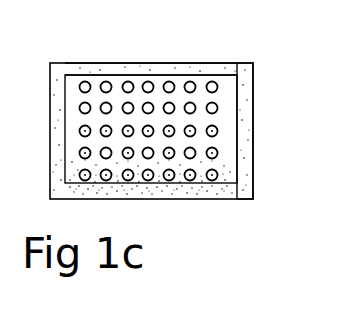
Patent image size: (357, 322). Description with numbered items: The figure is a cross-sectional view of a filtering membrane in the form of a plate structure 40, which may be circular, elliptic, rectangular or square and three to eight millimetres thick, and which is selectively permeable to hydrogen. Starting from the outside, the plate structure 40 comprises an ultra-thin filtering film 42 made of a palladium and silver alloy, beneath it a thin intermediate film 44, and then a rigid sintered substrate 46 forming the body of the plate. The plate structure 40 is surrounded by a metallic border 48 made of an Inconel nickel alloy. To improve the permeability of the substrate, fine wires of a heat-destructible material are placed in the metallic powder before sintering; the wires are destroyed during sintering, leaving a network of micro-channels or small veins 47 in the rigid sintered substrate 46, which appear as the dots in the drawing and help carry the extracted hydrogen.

The plate structure 40 is at (33, 92).
The ultra-thin filtering film 42 is at (107, 63).
The thin intermediate film 44 is at (183, 63).
The rigid sintered substrate 46 is at (197, 166).
The small veins 47 is at (109, 180).
The metallic border 48 is at (243, 131).